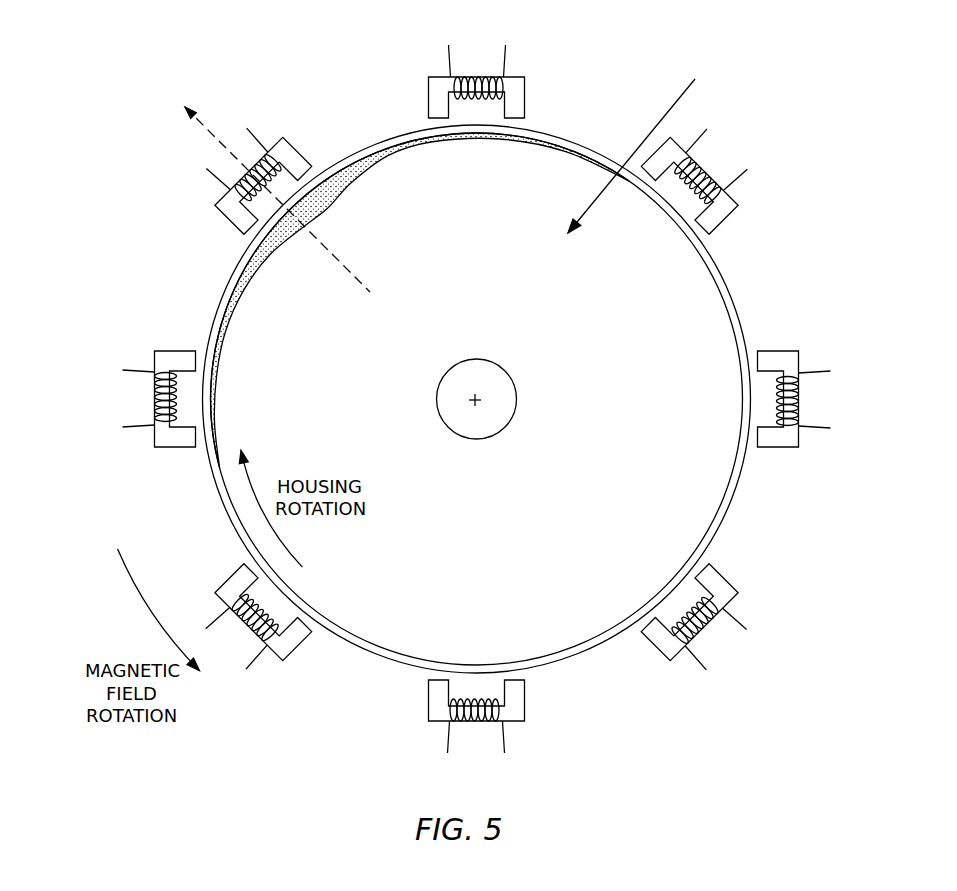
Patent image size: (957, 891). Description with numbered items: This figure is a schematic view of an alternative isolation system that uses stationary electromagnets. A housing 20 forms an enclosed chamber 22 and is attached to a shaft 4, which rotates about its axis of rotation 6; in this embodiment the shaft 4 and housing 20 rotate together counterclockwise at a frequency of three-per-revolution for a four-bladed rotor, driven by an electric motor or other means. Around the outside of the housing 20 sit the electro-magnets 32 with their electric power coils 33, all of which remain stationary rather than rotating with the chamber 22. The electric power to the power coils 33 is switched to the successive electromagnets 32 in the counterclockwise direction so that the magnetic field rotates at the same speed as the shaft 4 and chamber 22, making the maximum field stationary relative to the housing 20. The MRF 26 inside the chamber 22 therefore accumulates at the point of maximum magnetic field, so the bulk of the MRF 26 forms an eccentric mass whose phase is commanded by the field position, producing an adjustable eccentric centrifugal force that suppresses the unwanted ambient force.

The shaft 4 is at (510, 375).
The axis of rotation 6 is at (478, 403).
The housing 20 is at (735, 495).
The chamber 22 is at (646, 143).
The MRF 26 is at (318, 213).
The electro-magnets 32 is at (520, 95).
The electric power coils 33 is at (448, 50).